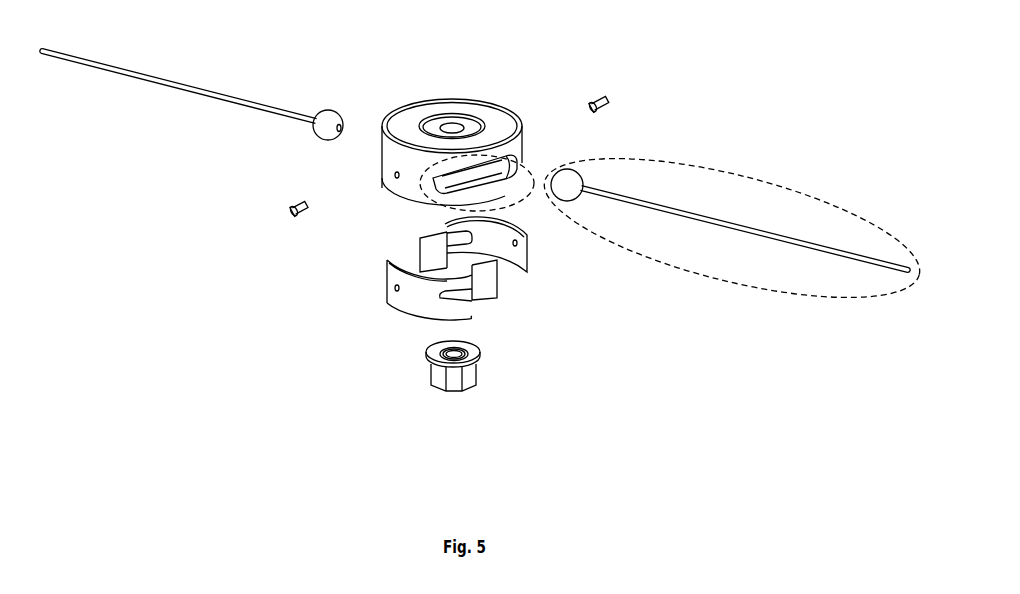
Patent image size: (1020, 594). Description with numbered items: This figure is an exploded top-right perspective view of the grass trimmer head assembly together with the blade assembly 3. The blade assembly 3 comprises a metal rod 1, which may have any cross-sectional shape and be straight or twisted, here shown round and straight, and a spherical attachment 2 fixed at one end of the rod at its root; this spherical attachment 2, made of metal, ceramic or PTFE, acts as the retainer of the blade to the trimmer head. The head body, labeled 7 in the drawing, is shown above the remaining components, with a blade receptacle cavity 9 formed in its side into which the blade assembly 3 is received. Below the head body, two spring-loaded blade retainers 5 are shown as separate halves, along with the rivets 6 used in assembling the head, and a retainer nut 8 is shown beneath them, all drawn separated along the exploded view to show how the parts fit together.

The metal rod 1 is at (167, 80).
The spherical attachment 2 is at (313, 129).
The blade assembly 3 is at (750, 183).
The spring-loaded blade retainers 5 is at (533, 263).
The rivets 6 is at (285, 215).
The spool body 7 is at (438, 104).
The retainer nut 8 is at (483, 348).
The blade receptacle cavity 9 is at (532, 162).